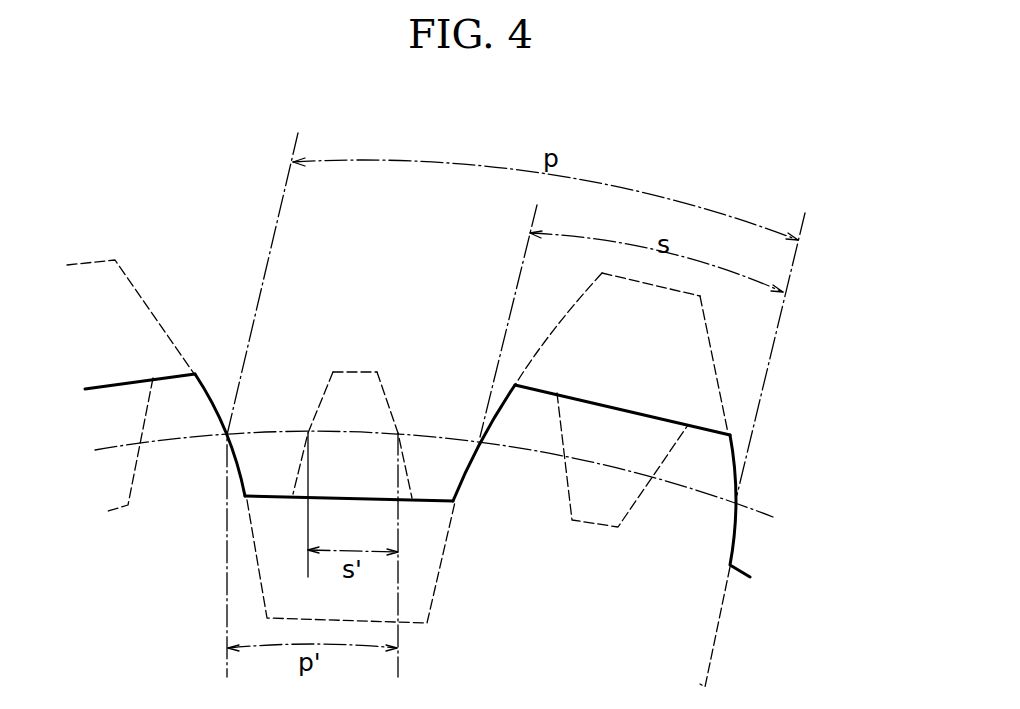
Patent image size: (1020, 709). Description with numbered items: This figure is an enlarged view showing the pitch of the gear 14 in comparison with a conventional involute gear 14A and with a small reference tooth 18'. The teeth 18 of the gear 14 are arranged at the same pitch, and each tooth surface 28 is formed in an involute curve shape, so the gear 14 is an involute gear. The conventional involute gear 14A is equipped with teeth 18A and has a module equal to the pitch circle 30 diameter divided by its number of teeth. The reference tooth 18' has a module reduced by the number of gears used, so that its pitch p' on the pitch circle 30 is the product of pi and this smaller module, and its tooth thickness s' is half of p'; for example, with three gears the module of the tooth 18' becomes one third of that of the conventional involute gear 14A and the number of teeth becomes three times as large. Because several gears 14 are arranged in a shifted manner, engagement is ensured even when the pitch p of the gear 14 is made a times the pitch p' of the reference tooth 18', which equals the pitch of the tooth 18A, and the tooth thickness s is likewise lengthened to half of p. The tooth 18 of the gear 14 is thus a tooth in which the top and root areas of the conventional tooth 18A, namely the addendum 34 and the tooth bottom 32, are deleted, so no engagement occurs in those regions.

The gear 14 is at (740, 498).
The tooth 18 is at (480, 425).
The tooth 18' is at (352, 383).
The tooth surface 28 is at (205, 388).
The pitch circle 30 is at (273, 433).
The tooth bottom 32 is at (367, 497).
The addendum 34 is at (700, 430).
The tooth 18A is at (698, 343).
The gear 14A is at (722, 368).